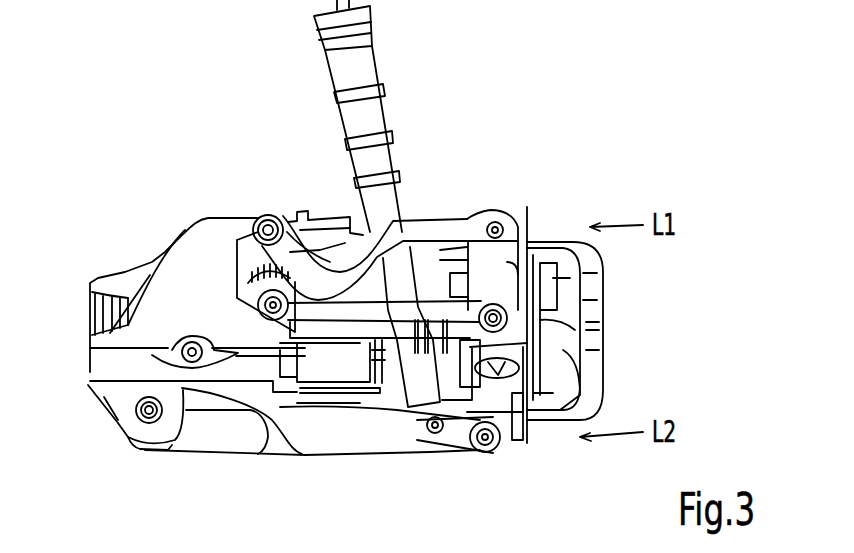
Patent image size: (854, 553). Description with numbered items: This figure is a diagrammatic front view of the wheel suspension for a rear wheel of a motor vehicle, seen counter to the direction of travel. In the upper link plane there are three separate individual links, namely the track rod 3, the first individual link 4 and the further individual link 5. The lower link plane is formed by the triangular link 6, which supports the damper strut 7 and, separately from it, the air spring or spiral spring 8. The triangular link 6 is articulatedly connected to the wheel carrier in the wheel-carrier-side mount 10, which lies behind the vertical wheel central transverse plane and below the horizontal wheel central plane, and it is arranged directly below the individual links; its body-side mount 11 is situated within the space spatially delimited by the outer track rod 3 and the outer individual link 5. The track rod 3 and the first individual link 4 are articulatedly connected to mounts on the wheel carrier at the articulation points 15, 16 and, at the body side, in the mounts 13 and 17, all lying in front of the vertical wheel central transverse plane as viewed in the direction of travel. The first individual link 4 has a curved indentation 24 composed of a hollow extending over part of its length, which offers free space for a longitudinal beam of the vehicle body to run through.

The individual link (track rod) 3 is at (367, 310).
The first individual link 4 is at (437, 219).
The further individual link 5 is at (473, 213).
The triangular link 6 is at (433, 437).
The damper strut 7 is at (397, 148).
The air spring or spiral spring 8 is at (332, 215).
The wheel-carrier-side mount 10 is at (485, 452).
The body-side mount 11 is at (147, 424).
The body-side mount 13 is at (507, 319).
The articulation point 15 is at (252, 300).
The articulation point 16 is at (512, 215).
The body-side mount 17 is at (253, 220).
The curved indentation 24 is at (293, 250).